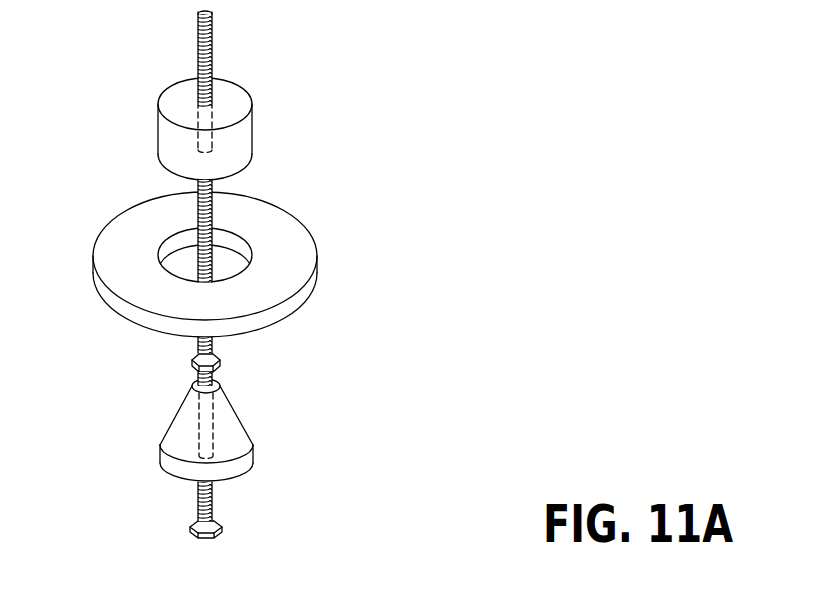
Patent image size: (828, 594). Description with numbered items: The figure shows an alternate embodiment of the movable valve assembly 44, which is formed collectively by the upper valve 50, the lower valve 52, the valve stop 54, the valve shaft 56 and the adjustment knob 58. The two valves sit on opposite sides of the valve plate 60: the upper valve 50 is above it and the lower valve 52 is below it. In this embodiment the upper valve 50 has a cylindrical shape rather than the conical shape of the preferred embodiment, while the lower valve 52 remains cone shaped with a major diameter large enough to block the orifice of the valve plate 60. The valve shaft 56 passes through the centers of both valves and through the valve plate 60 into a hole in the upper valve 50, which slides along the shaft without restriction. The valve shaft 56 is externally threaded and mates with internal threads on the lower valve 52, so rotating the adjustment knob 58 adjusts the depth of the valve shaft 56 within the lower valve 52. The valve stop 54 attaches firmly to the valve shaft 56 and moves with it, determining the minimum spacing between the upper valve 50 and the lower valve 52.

The movable valve assembly 44 is at (450, 82).
The upper valve 50 is at (252, 130).
The valve plate 60 is at (317, 263).
The valve stop 54 is at (222, 360).
The lower valve 52 is at (253, 447).
The valve shaft 56 is at (198, 507).
The adjustment knob 58 is at (222, 528).